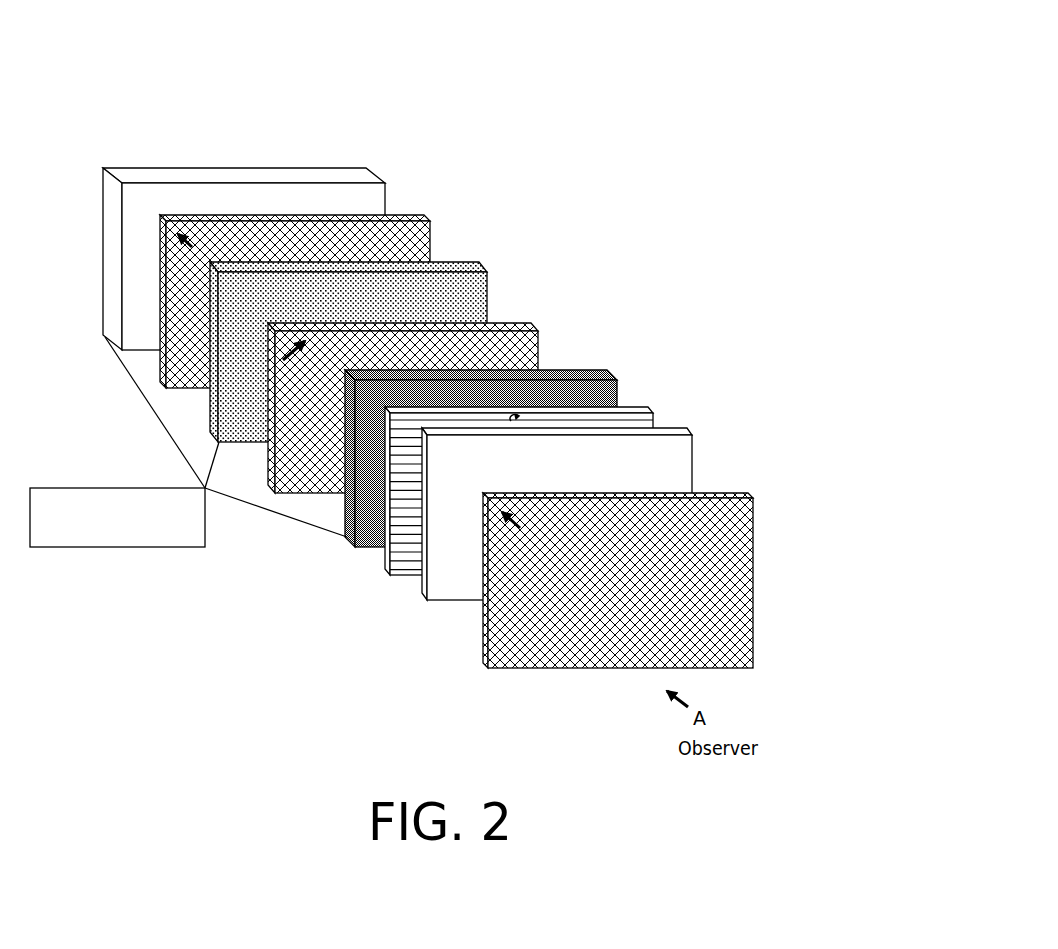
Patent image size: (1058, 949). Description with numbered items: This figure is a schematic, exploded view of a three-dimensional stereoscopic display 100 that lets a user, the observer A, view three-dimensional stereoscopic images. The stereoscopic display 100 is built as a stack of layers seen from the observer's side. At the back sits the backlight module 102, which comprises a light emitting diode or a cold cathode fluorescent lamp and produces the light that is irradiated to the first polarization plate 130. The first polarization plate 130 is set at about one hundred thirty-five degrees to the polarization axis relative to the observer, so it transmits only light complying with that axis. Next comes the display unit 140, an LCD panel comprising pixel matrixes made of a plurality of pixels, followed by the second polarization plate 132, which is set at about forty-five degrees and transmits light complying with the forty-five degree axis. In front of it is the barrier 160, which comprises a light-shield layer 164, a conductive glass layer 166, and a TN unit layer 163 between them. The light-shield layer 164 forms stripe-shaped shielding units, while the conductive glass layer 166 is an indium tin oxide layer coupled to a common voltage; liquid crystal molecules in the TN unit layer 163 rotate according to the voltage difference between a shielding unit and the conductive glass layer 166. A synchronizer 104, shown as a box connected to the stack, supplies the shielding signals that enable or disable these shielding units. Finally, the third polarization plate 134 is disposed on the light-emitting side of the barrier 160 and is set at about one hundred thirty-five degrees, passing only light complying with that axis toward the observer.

The stereoscopic display 100 is at (460, 55).
The backlight module 102 is at (355, 176).
The synchronizer 104 is at (95, 488).
The first polarization plate 130 is at (430, 232).
The display unit 140 is at (478, 268).
The second polarization plate 132 is at (537, 327).
The barrier 160 is at (625, 439).
The light-shield layer 164 is at (618, 380).
The TN unit layer 163 is at (648, 405).
The conductive glass layer 166 is at (690, 432).
The third polarization plate 134 is at (480, 637).